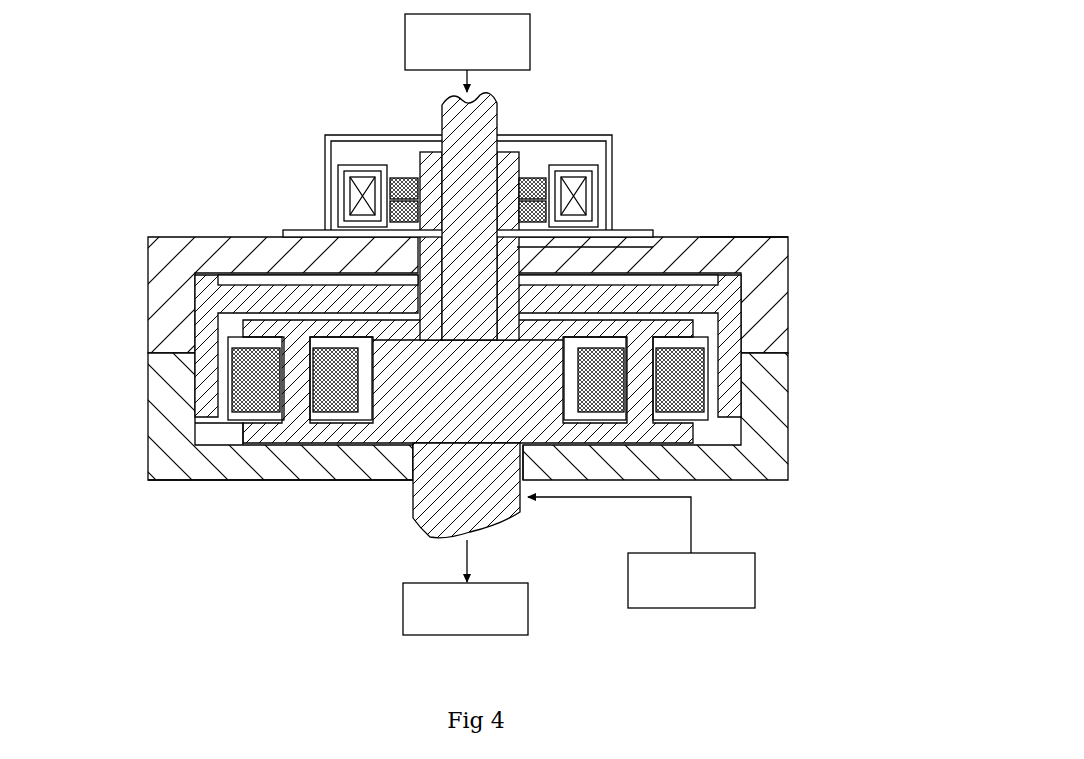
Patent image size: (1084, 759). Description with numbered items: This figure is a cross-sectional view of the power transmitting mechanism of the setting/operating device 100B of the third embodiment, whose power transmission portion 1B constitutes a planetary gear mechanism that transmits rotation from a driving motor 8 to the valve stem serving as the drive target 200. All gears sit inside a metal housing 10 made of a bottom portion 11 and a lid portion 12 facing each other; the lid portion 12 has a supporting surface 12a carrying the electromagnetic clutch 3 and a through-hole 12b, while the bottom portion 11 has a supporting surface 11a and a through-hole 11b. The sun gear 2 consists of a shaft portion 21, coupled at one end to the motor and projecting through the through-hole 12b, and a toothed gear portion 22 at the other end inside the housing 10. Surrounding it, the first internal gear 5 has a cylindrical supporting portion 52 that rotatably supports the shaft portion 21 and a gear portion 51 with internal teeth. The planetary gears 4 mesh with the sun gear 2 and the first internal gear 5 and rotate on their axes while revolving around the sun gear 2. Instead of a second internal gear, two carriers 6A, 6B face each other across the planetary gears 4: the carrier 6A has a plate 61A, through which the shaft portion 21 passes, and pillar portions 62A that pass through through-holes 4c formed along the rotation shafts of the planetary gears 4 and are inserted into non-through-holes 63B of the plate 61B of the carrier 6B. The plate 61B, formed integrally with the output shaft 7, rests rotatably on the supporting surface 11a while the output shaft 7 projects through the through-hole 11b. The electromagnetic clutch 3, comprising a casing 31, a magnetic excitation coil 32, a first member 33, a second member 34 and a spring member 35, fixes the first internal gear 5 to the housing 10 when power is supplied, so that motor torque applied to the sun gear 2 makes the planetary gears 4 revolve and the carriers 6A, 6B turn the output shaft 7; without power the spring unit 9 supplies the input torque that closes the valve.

The setting/operating device 100B is at (900, 42).
The power transmission portion 1B is at (779, 120).
The sun gear 2 is at (517, 246).
The shaft portion 21 is at (597, 240).
The gear portion 22 is at (607, 247).
The electromagnetic clutch 3 is at (510, 154).
The casing 31 is at (325, 152).
The magnetic excitation coil 32 is at (570, 165).
The first member 33 is at (527, 178).
The second member 34 is at (338, 203).
The spring member 35 is at (424, 172).
The planetary gear 4 is at (222, 390).
The through-hole 4c is at (200, 432).
The first internal gear 5 is at (400, 336).
The gear portion 51 is at (220, 299).
The cylindrical supporting portion 52 is at (220, 269).
The carrier 6A is at (206, 374).
The plate 61A is at (222, 333).
The pillar portion 62A is at (222, 358).
The carrier 6B is at (719, 396).
The plate 61B is at (693, 430).
The non-through-hole 63B is at (667, 423).
The output shaft 7 is at (413, 506).
The driving motor 8 is at (530, 40).
The spring unit 9 is at (755, 580).
The housing 10 is at (501, 353).
The bottom portion 11 is at (776, 366).
The supporting surface 11a is at (185, 455).
The through-hole 11b is at (413, 486).
The lid portion 12 is at (776, 338).
The supporting surface 12a is at (768, 237).
The through-hole 12b is at (613, 203).
The drive target 200 is at (403, 607).